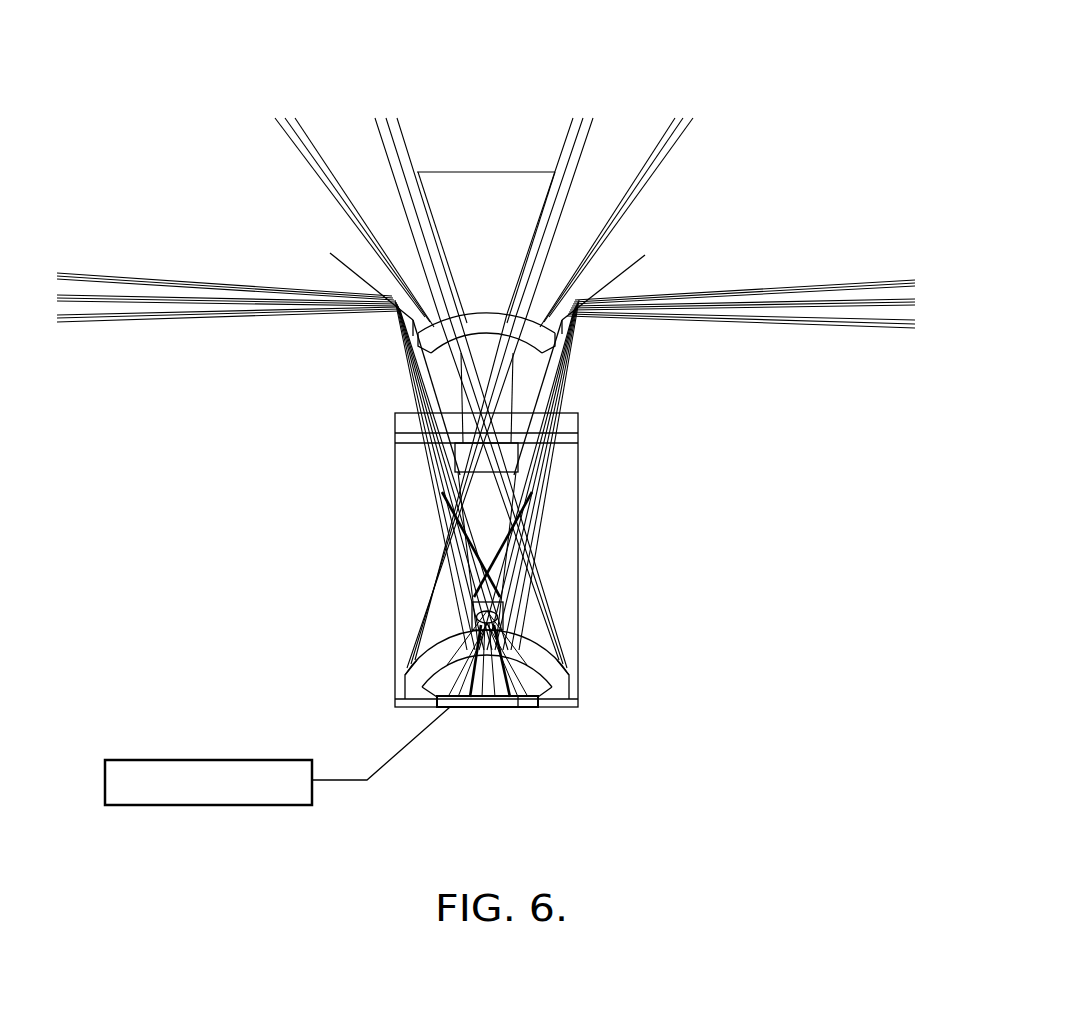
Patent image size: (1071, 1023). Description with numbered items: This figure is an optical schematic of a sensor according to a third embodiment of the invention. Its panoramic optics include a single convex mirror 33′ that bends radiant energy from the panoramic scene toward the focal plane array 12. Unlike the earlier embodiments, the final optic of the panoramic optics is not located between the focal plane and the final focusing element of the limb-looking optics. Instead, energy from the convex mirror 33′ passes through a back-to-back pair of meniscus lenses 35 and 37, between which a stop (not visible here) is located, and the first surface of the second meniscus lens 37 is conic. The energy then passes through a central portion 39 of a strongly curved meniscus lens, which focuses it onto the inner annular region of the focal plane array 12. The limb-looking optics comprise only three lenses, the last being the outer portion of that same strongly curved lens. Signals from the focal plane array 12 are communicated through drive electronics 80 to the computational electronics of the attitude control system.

The focal plane array 12 is at (517, 707).
The convex mirror 33′ is at (625, 270).
The meniscus lens 35 is at (502, 605).
The second meniscus lens 37 is at (502, 622).
The central portion 39 is at (473, 643).
The drive electronics 80 is at (187, 760).